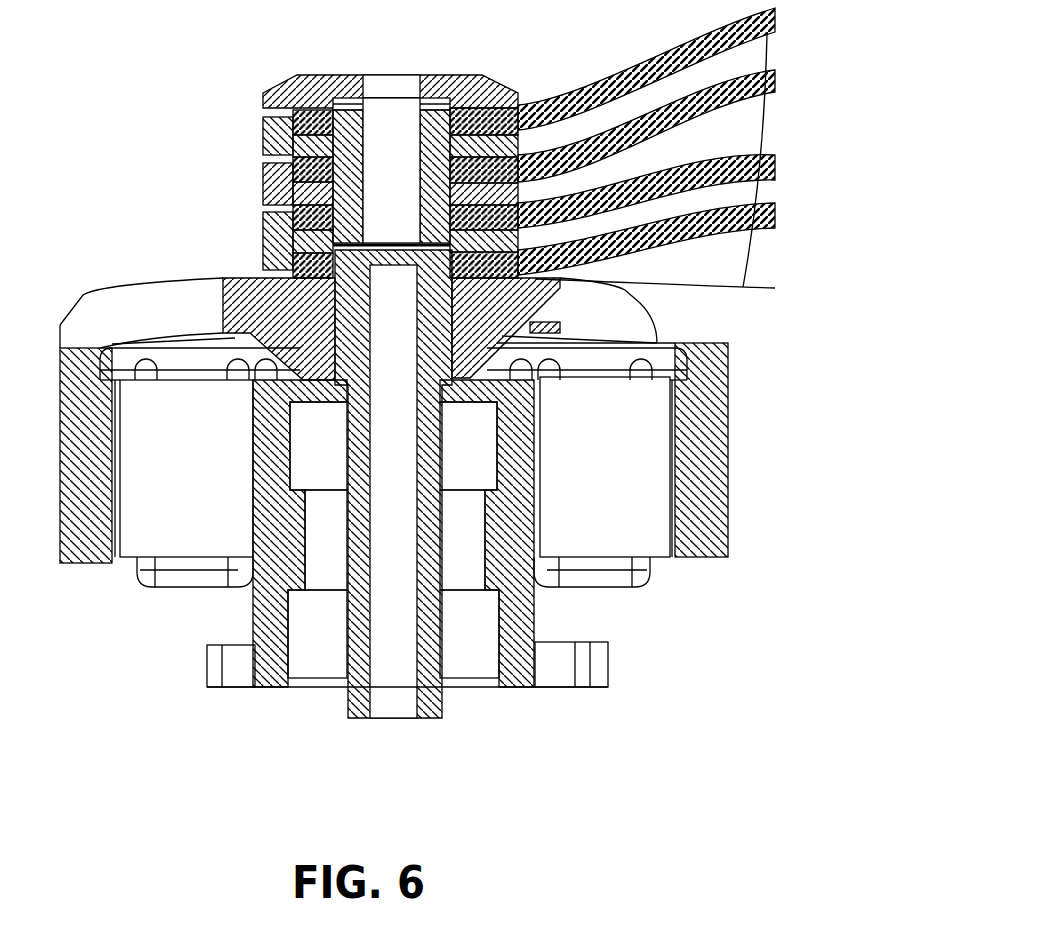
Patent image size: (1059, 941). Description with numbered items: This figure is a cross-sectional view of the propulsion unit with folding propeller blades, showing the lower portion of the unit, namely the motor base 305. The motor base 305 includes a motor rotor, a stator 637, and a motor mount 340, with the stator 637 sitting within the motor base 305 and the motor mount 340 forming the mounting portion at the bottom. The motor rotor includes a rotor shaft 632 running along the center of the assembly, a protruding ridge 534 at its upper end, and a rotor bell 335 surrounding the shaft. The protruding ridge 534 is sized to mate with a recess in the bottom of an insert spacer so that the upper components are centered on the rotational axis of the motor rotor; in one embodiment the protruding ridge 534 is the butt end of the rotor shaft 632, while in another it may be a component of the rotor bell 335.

The motor base 305 is at (104, 716).
The rotor bell 335 is at (168, 321).
The motor mount 340 is at (235, 686).
The protruding ridge 534 is at (333, 250).
The rotor shaft 632 is at (411, 379).
The stator 637 is at (201, 474).